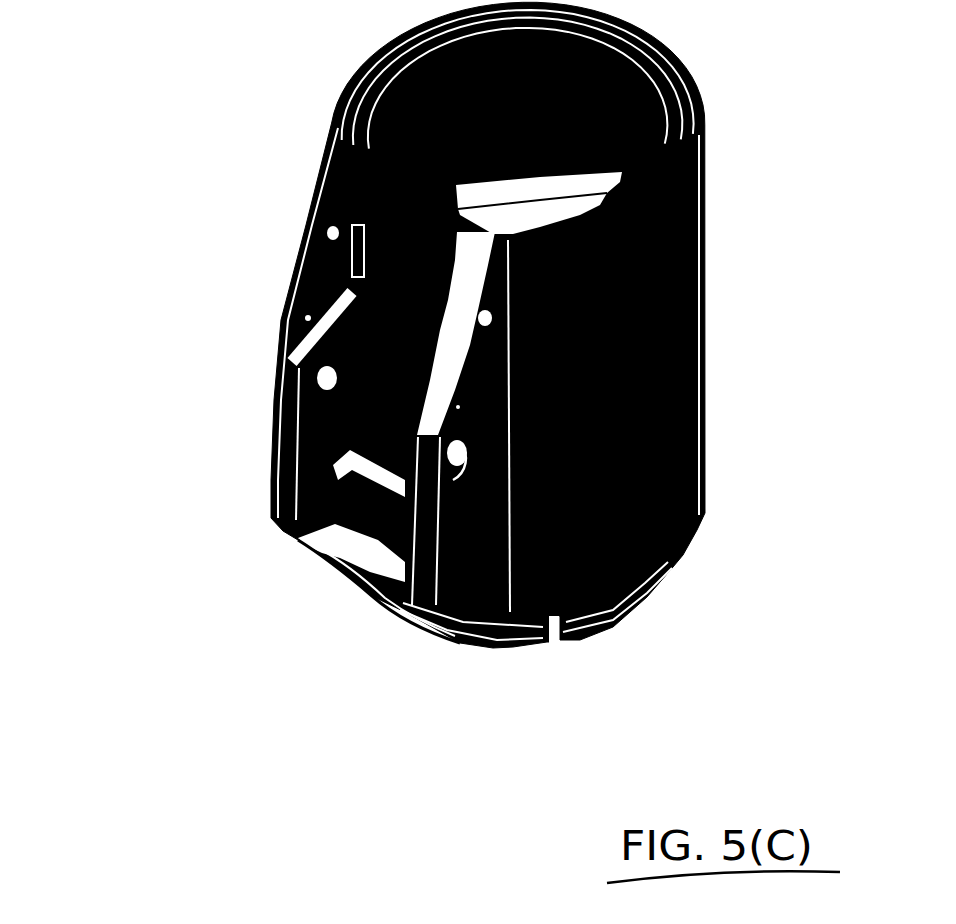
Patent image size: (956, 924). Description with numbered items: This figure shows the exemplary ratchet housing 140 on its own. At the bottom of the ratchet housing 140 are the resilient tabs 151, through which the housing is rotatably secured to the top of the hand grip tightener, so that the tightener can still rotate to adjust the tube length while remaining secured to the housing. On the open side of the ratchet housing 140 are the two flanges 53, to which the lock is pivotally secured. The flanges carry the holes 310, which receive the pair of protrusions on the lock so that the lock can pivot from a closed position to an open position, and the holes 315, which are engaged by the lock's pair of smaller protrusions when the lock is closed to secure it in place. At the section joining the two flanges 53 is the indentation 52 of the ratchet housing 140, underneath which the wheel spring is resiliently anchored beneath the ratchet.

The ratchet housing 140 is at (733, 338).
The holes 310 is at (318, 233).
The holes 315 is at (280, 320).
The indentation 52 is at (385, 525).
The flanges 53 is at (400, 612).
The resilient tabs 151 is at (597, 626).